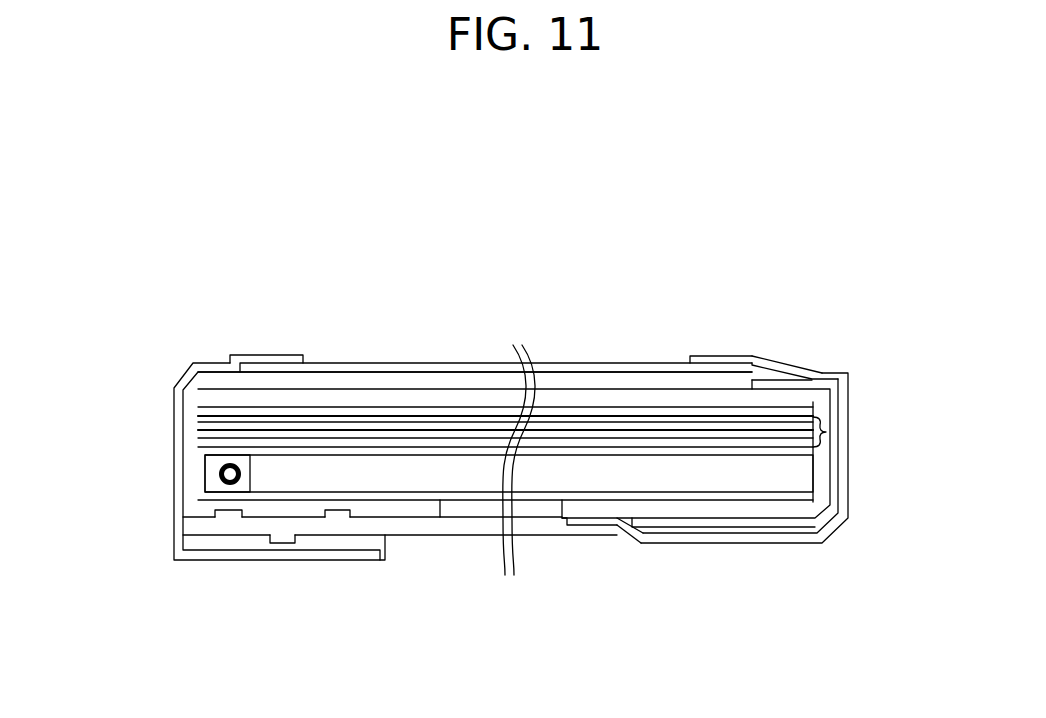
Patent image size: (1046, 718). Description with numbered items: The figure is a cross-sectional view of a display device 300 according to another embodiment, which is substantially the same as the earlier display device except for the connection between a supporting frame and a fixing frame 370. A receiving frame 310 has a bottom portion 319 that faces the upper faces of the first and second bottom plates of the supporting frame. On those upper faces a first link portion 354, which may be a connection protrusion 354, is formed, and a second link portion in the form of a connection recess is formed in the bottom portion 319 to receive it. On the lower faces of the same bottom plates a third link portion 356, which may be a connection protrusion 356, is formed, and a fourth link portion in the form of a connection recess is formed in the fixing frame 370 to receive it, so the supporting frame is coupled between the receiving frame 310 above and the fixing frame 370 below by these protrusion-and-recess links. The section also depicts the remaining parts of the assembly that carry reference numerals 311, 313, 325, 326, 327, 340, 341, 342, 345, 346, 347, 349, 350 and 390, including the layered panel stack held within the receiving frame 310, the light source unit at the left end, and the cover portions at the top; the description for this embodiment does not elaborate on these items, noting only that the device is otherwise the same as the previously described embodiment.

The display device 300 is at (470, 186).
The receiving frame 310 is at (186, 442).
The side wall 311 is at (190, 408).
The bottom plate 313 is at (832, 488).
The bottom portion 319 is at (594, 509).
The optical sheets 325 is at (826, 432).
The light source unit 326 is at (205, 484).
The light emitting diode 327 is at (205, 471).
The display panel 340 is at (505, 351).
The first substrate 341 is at (671, 398).
The second substrate 342 is at (555, 289).
The upper polarizer 345 is at (622, 382).
The lower polarizer 346 is at (572, 372).
The support portion 347 is at (706, 524).
The inclined portion 349 is at (818, 382).
The light guide plate 350 is at (444, 519).
The first link portion 354 is at (341, 516).
The third link portion 356 is at (283, 543).
The fixing frame 370 is at (215, 543).
The cover member 390 is at (267, 355).